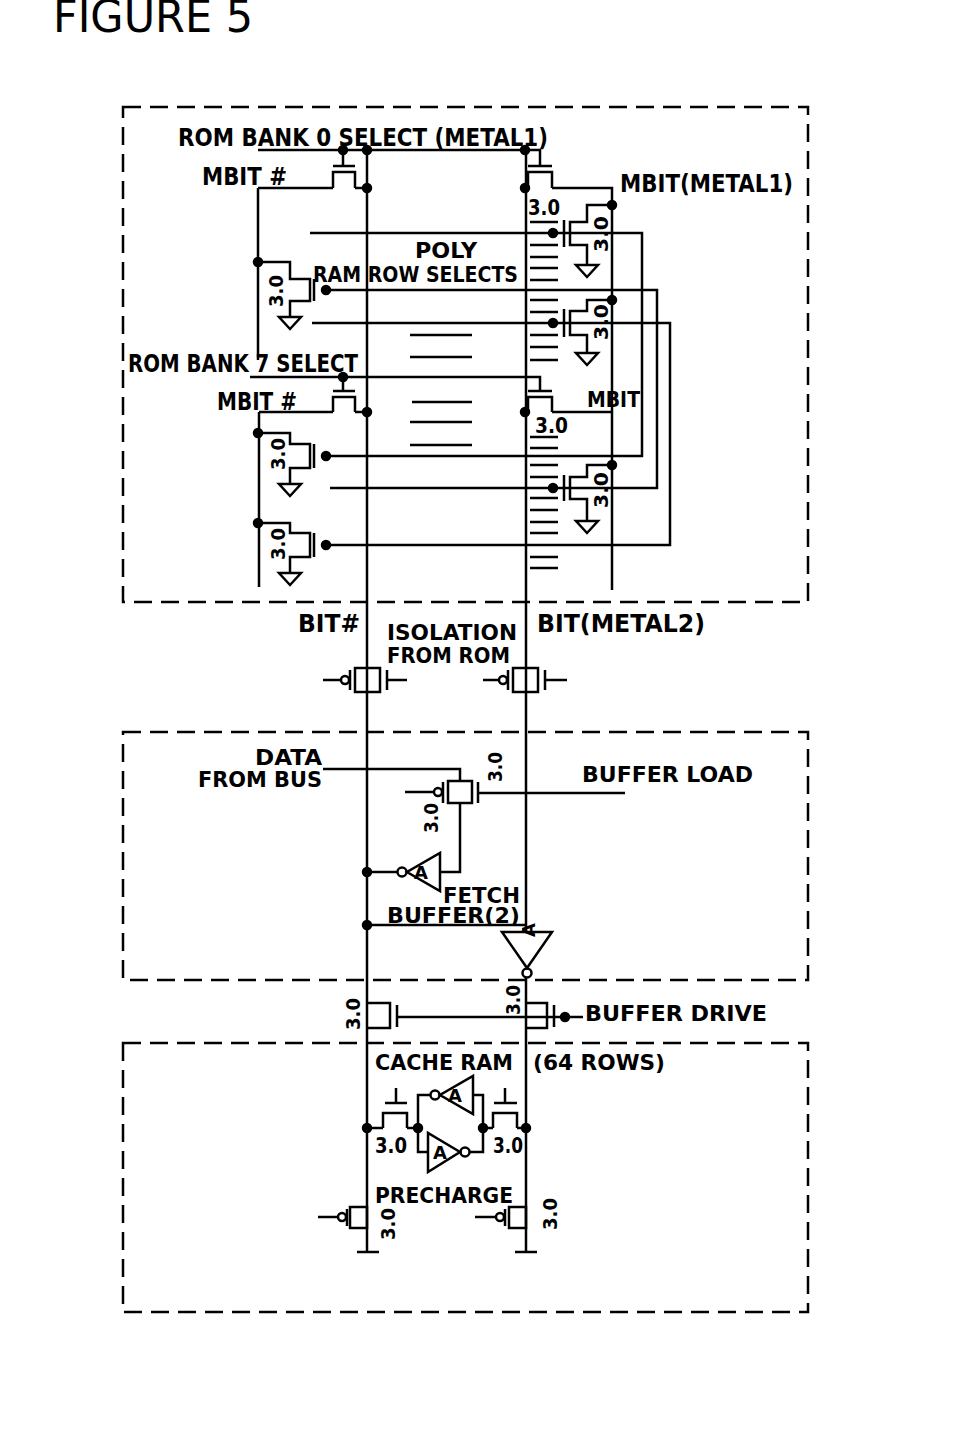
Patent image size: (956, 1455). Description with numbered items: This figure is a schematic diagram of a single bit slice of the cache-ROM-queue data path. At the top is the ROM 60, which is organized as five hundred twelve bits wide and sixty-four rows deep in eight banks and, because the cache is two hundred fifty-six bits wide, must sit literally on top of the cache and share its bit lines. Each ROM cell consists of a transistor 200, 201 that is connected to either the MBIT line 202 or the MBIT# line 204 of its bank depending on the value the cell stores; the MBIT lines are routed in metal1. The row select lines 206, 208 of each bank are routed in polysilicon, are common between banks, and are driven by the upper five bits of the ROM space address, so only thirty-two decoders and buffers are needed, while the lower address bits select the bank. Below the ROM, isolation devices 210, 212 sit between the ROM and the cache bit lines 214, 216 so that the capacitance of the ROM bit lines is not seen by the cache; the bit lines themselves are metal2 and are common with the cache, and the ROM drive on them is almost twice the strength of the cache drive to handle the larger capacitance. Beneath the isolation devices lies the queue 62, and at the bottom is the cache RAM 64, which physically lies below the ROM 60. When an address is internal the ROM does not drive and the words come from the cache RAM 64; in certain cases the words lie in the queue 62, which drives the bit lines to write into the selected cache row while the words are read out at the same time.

The ROM 60 is at (123, 163).
The Queue 62 is at (123, 762).
The Cache RAM 64 is at (123, 1078).
The transistor 200 is at (362, 184).
The transistor 201 is at (363, 406).
The MBIT line 202 is at (258, 222).
The MBIT# line 204 is at (258, 420).
The row select line 206 is at (483, 231).
The row select line 208 is at (412, 545).
The isolation device 210 is at (356, 668).
The isolation device 212 is at (539, 692).
The bit line 214 is at (367, 838).
The bit line 216 is at (526, 835).